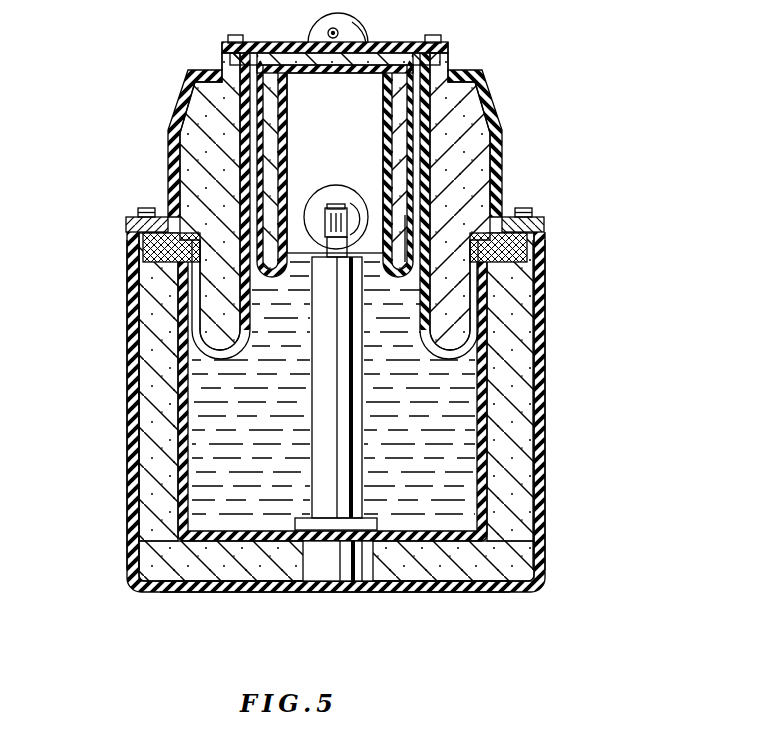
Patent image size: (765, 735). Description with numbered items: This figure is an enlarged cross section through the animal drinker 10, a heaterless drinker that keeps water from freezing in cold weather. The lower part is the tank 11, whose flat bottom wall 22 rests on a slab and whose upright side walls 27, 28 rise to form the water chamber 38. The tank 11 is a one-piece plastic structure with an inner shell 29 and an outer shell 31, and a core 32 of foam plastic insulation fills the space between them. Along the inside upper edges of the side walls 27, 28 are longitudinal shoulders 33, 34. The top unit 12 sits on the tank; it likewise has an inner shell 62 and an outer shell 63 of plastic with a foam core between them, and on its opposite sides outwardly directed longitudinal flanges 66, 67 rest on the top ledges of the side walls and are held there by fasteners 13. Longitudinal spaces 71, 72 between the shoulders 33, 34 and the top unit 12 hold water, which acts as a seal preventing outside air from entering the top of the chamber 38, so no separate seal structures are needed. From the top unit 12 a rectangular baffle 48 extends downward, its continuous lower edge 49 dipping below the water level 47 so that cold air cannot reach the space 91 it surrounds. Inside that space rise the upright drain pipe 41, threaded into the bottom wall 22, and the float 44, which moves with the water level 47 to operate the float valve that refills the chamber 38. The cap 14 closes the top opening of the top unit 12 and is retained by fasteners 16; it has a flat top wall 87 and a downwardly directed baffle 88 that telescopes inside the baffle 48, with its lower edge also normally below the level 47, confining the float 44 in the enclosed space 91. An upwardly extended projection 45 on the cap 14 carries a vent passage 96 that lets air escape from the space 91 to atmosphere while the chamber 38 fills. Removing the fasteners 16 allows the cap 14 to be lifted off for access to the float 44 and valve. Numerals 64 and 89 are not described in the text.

The animal drinker 10 is at (600, 115).
The tank 11 is at (112, 497).
The top unit 12 is at (168, 150).
The fasteners 13 is at (142, 207).
The cap 14 is at (467, 38).
The fasteners 16 is at (234, 35).
The bottom wall 22 is at (235, 595).
The side wall 27 is at (546, 398).
The side wall 28 is at (128, 398).
The inner plastic shell 29 is at (477, 444).
The outer plastic shell 31 is at (546, 533).
The core 32 is at (520, 482).
The longitudinal shoulder 33 is at (150, 307).
The longitudinal shoulder 34 is at (536, 330).
The chamber 38 is at (262, 487).
The upright pipe 41 is at (352, 489).
The float 44 is at (325, 192).
The projection 45 is at (342, 30).
The level 47 is at (405, 215).
The baffle 48 is at (425, 356).
The lower edge 49 is at (215, 352).
The inner shell 62 is at (432, 148).
The outer shell 63 is at (182, 92).
The right upper insulation 64 is at (432, 146).
The longitudinal flange 66 is at (127, 226).
The longitudinal flange 67 is at (546, 226).
The longitudinal space 71 is at (180, 262).
The longitudinal space 72 is at (500, 270).
The top wall 87 is at (277, 53).
The baffle 88 is at (383, 160).
The passage 89 is at (275, 280).
The space 91 is at (358, 110).
The vent passage 96 is at (352, 28).